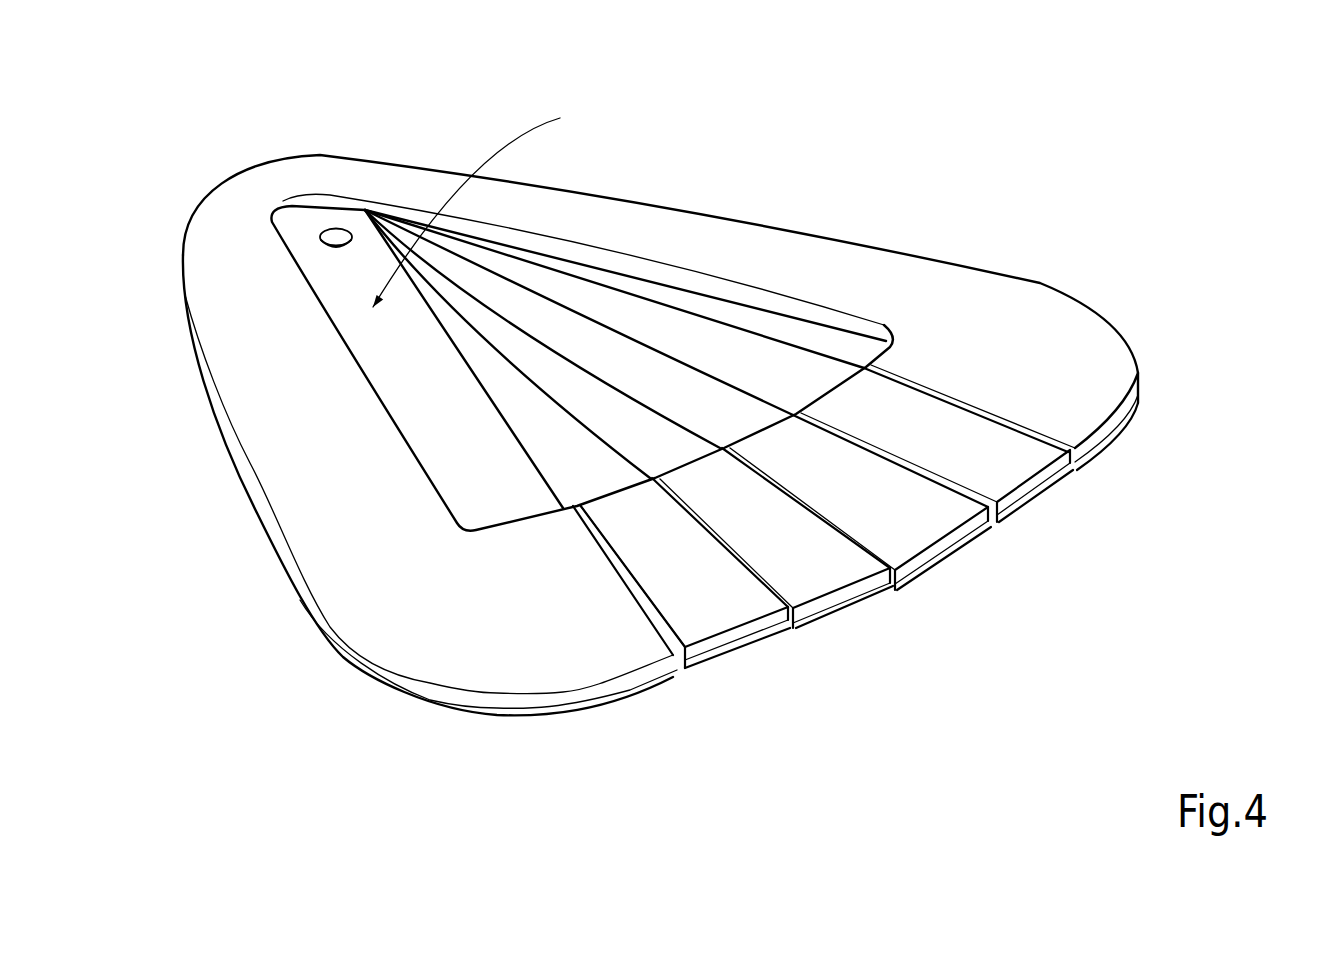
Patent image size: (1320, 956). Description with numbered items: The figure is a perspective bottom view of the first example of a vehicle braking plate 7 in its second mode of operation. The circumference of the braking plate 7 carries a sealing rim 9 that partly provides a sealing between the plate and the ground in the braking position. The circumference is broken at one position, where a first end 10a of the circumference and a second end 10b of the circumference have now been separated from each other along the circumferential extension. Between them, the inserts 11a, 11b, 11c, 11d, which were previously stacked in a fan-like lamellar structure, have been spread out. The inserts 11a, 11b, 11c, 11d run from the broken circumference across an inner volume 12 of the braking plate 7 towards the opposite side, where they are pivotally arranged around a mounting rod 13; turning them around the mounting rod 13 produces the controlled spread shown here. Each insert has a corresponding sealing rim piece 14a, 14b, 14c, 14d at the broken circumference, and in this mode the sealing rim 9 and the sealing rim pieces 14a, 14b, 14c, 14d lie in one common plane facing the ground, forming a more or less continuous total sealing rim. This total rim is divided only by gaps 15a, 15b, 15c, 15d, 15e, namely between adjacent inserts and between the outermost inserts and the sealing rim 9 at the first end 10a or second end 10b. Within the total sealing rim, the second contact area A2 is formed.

The braking plate 7 is at (332, 107).
The sealing rim 9 is at (240, 245).
The first end of the circumference 10a is at (662, 616).
The second end of the circumference 10b is at (1040, 446).
The insert 11a is at (497, 388).
The insert 11b is at (567, 389).
The insert 11c is at (655, 388).
The insert 11d is at (757, 372).
The inner volume 12 is at (512, 307).
The mounting rod 13 is at (338, 232).
The sealing rim piece 14a is at (745, 617).
The sealing rim piece 14b is at (822, 578).
The sealing rim piece 14c is at (933, 528).
The sealing rim piece 14d is at (1015, 482).
The gap 15a is at (678, 662).
The gap 15b is at (792, 630).
The gap 15c is at (892, 583).
The gap 15d is at (995, 527).
The gap 15e is at (1070, 476).
The second contact area A2 is at (484, 206).